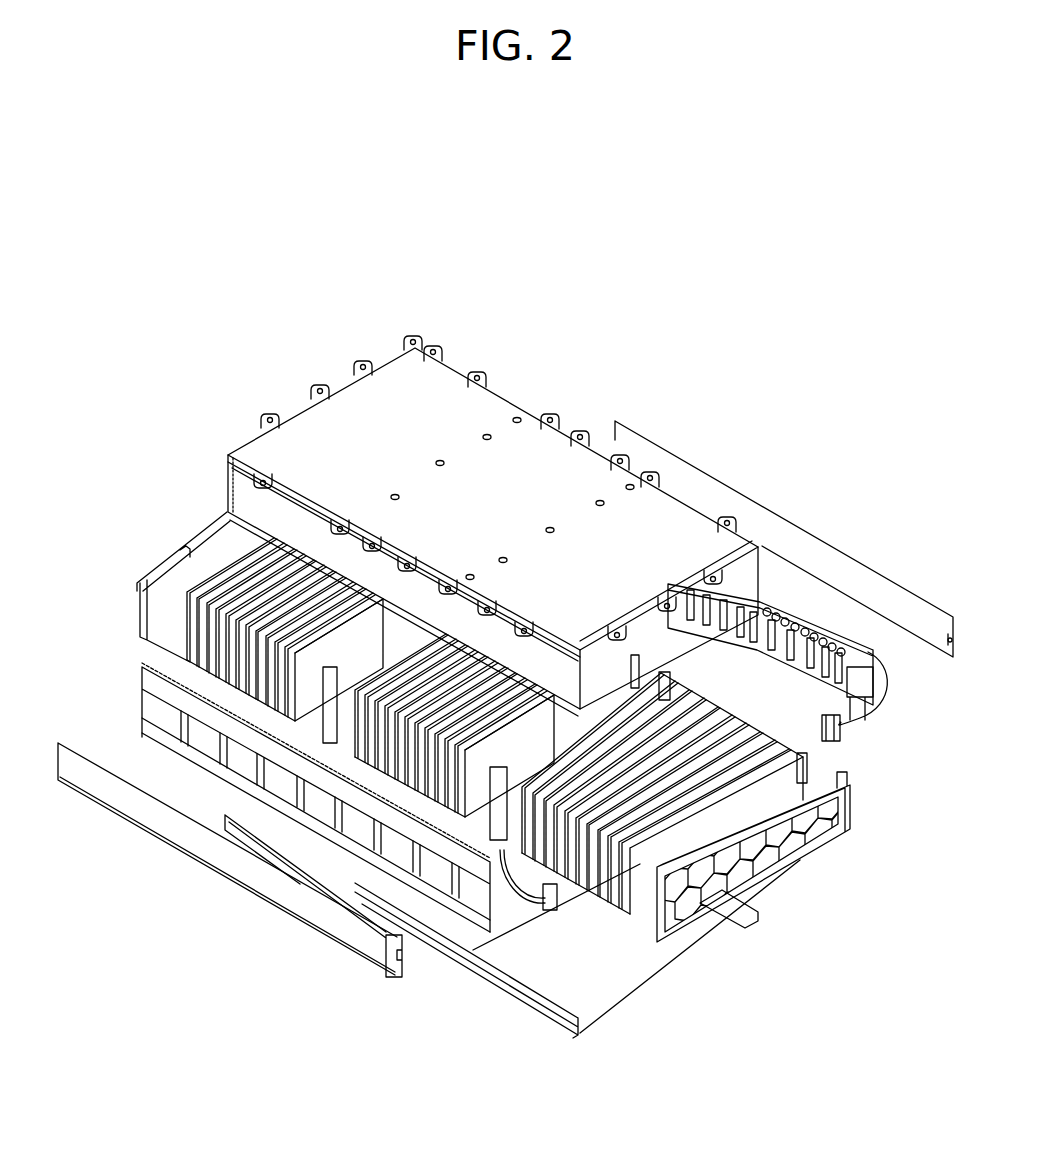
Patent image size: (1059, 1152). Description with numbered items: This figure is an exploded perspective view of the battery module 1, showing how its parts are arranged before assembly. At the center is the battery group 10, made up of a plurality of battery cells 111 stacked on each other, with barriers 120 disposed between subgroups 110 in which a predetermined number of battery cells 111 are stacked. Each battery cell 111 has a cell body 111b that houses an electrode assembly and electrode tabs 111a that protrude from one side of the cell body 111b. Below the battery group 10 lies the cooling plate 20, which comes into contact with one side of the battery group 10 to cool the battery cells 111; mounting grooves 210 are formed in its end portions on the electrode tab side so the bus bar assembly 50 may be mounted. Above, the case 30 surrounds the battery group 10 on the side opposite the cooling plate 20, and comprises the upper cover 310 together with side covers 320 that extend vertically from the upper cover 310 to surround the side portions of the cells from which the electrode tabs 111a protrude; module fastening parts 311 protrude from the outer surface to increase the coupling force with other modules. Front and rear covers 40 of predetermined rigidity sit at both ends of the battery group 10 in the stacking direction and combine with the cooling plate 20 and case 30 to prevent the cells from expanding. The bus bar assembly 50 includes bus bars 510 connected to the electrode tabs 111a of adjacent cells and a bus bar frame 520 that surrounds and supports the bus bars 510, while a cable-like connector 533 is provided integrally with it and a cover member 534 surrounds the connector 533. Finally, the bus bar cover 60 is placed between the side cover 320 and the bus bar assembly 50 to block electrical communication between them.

The battery module 1 is at (75, 209).
The battery group 10 is at (930, 748).
The cooling plate 20 is at (543, 1022).
The case 30 is at (328, 330).
The front and rear covers 40 is at (650, 888).
The bus bar assembly 50 is at (455, 1016).
The bus bar cover 60 is at (132, 808).
The subgroup 110 is at (812, 835).
The battery cell 111 is at (862, 903).
The electrode tab 111a is at (668, 928).
The cell body 111b is at (722, 908).
The barrier 120 is at (762, 710).
The mounting groove 210 is at (588, 1027).
The upper cover 310 is at (350, 415).
The module fastening part 311 is at (270, 480).
The side cover 320 is at (242, 455).
The bus bar 510 is at (323, 817).
The bus bar frame 520 is at (386, 879).
The connector 533 is at (490, 878).
The cover member 534 is at (405, 873).